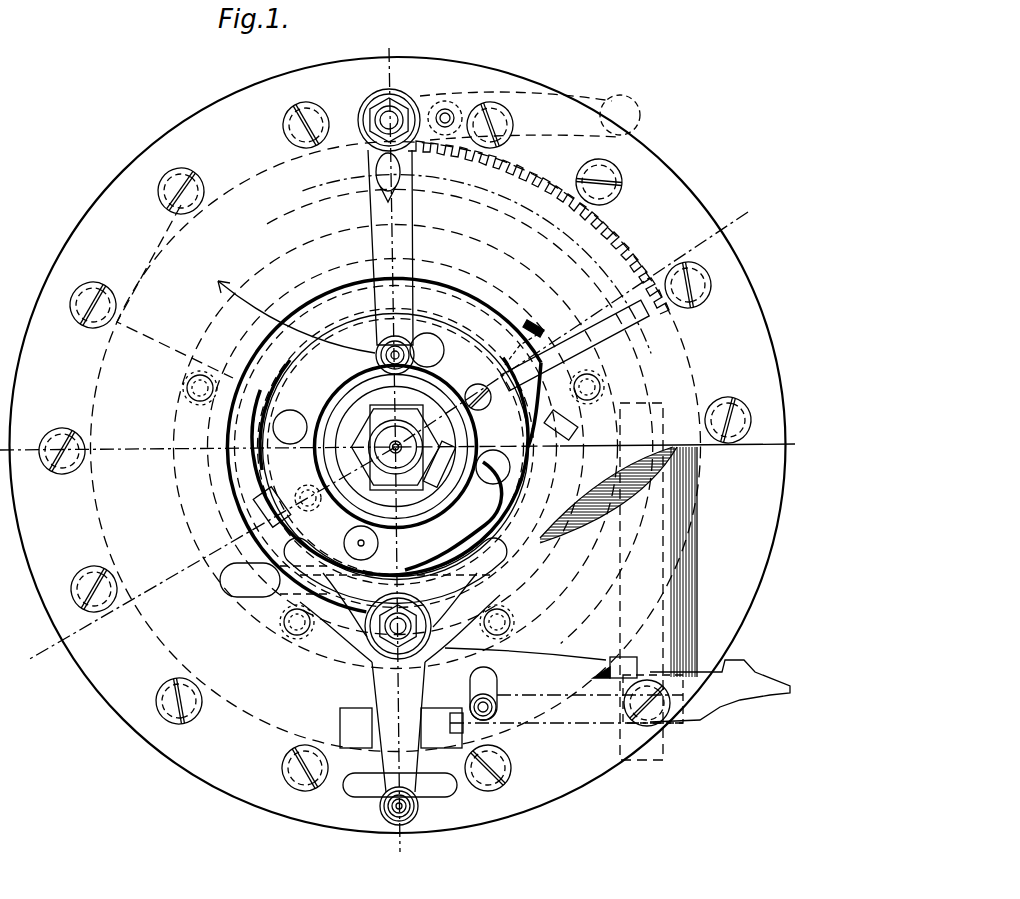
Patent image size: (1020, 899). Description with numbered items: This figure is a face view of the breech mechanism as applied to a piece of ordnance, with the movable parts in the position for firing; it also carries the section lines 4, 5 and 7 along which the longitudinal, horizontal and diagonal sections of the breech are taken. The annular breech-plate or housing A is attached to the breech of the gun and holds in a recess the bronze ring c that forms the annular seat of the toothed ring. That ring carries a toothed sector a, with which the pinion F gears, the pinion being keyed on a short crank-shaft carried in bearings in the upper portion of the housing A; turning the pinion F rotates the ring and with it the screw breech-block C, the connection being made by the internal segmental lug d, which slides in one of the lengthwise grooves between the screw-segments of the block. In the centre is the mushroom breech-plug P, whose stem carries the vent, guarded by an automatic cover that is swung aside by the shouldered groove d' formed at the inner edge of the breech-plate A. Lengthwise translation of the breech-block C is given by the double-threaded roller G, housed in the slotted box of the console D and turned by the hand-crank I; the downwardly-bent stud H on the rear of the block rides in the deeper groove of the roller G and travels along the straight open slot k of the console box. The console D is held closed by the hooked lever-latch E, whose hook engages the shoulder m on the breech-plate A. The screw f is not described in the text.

The section line 4 4 is at (393, 451).
The section line 5 5 is at (402, 437).
The section line 7 7 is at (385, 434).
The annular breech-plate or housing A is at (398, 445).
The toothed sector a is at (486, 247).
The screw breech-block C is at (384, 444).
The bronze ring c is at (278, 417).
The mushroom breech-plug P is at (393, 441).
The internal segmental lug d is at (536, 393).
The shouldered groove d' is at (531, 333).
The downwardly-bent stud H is at (300, 528).
The straight open slot k is at (387, 549).
The pinion F is at (400, 98).
The screw f is at (448, 111).
The shoulder or catch m is at (374, 176).
The console D is at (458, 581).
The double-threaded roller G is at (385, 632).
The hand-crank I is at (565, 736).
The hooked lever-latch E is at (367, 782).